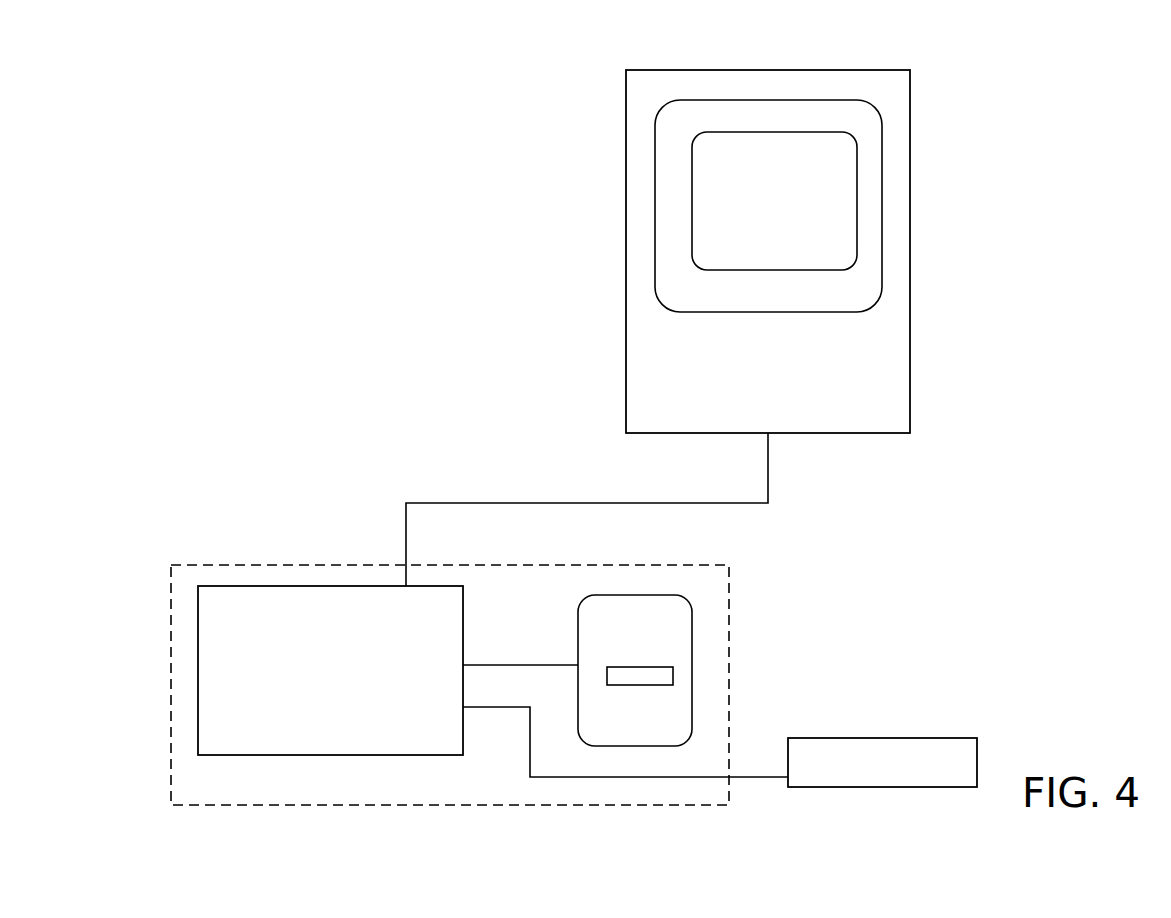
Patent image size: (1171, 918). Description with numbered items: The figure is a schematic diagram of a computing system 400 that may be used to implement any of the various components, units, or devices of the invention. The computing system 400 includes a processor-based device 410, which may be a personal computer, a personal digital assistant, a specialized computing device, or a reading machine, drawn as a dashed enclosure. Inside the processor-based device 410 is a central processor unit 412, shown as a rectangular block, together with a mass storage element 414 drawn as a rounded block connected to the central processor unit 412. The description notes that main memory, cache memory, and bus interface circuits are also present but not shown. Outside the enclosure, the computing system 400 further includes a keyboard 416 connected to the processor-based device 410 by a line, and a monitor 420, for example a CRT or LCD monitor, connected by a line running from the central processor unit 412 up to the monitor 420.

The computing system 400 is at (275, 84).
The processor-based device 410 is at (555, 806).
The central processor unit 412 is at (340, 586).
The mass storage element 414 is at (692, 648).
The keyboard 416 is at (805, 738).
The monitor 420 is at (626, 145).